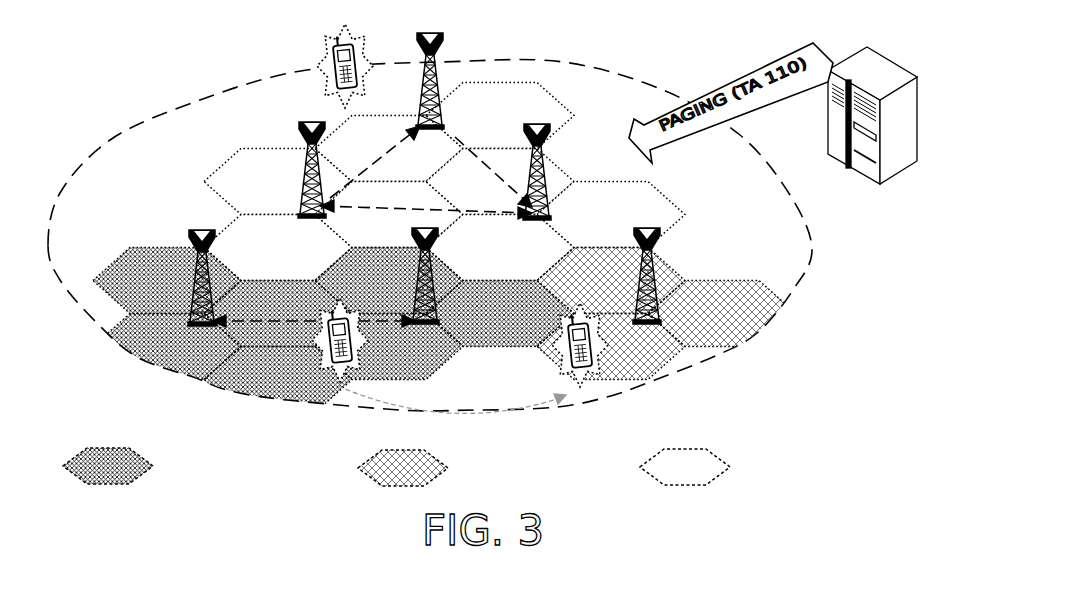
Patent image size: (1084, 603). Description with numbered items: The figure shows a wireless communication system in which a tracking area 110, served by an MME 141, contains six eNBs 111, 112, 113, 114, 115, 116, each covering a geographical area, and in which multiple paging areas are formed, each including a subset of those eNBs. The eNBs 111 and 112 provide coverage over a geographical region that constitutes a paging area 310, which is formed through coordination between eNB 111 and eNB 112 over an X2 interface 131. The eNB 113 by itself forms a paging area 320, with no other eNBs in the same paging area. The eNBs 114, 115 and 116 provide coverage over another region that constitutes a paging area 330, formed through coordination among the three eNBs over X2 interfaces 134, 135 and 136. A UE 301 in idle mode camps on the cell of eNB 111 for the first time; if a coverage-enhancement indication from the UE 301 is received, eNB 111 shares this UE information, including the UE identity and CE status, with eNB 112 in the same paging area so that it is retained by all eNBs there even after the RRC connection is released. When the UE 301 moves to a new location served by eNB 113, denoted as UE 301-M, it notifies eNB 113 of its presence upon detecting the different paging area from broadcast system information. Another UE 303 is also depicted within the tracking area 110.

The tracking area 110 is at (93, 159).
The eNB 111 is at (427, 233).
The eNB 112 is at (203, 234).
The eNB 113 is at (653, 238).
The eNB 114 is at (313, 123).
The eNB 115 is at (436, 38).
The eNB 116 is at (542, 124).
The X2 interface 131 is at (286, 322).
The X2 interface 134 is at (386, 148).
The X2 interface 135 is at (464, 136).
The X2 interface 136 is at (384, 206).
The MME 141 is at (882, 47).
The UE 301 is at (334, 306).
The UE 301-M is at (577, 308).
The user equipment 303 is at (332, 50).
The paging area 310 is at (201, 486).
The paging area 320 is at (498, 486).
The paging area 330 is at (780, 486).